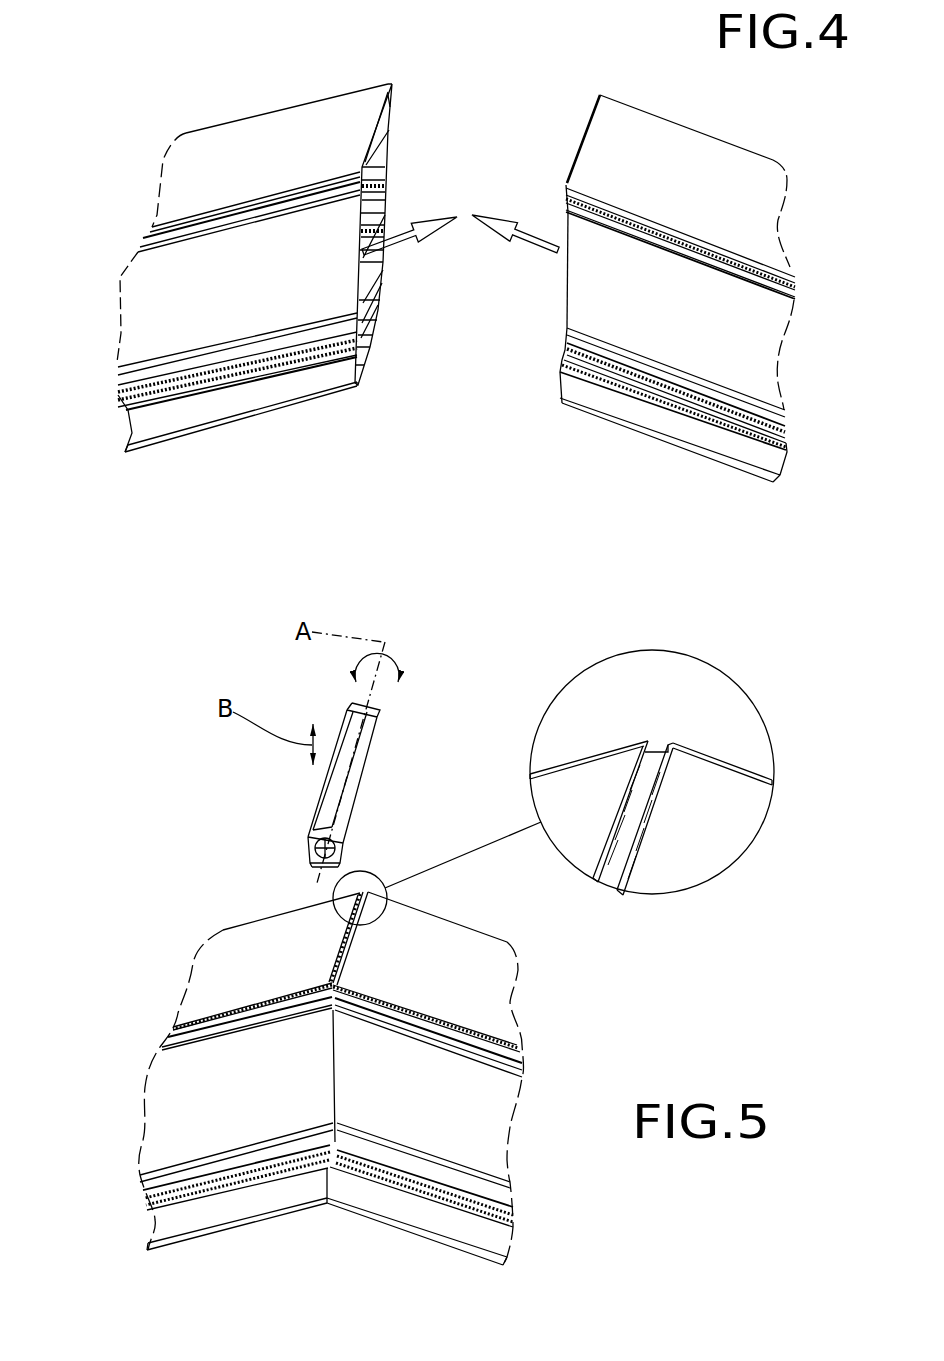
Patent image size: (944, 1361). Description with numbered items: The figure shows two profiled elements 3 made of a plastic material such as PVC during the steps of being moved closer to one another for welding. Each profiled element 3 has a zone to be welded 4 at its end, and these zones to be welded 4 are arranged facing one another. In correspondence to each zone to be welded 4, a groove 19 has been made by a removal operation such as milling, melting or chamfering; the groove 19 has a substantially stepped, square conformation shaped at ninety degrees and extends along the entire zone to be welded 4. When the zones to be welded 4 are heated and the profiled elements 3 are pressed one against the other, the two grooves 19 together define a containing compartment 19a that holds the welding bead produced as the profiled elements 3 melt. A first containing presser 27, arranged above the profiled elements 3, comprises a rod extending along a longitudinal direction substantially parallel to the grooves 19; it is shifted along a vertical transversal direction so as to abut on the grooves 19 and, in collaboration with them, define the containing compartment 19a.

In FIG. 4, the profiled element 3 is at (180, 455).
In FIG. 5, the profiled element 3 is at (222, 982).
In FIG. 4, the zone to be welded 4 is at (373, 349).
In FIG. 4, the groove 19 is at (378, 122).
In FIG. 5, the groove 19 is at (633, 813).
In FIG. 5, the containing compartment 19a is at (340, 953).
In FIG. 5, the first containing presser 27 is at (305, 823).